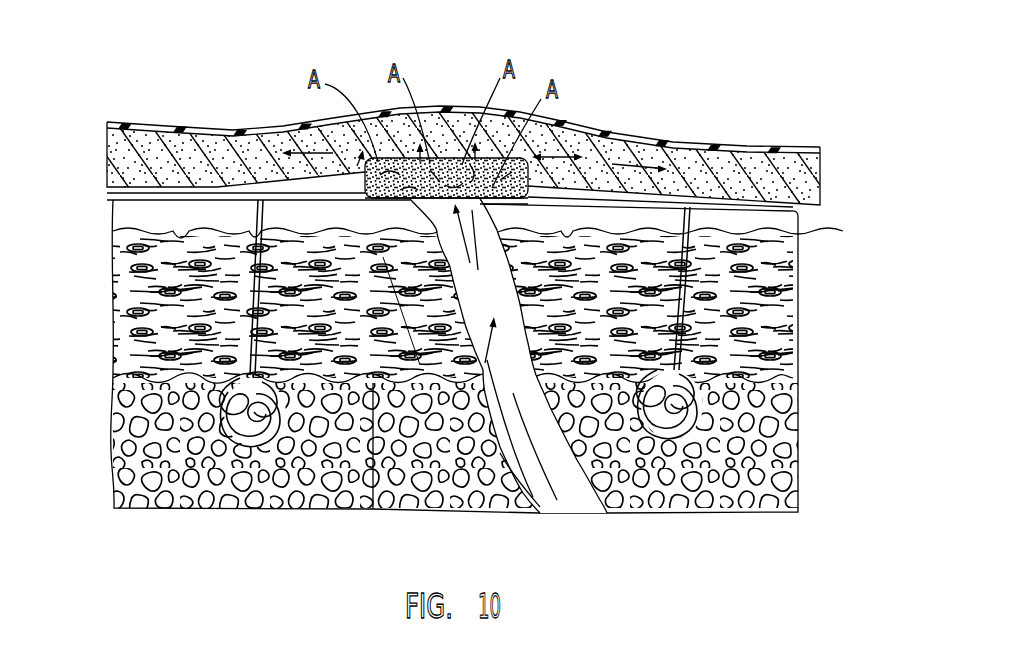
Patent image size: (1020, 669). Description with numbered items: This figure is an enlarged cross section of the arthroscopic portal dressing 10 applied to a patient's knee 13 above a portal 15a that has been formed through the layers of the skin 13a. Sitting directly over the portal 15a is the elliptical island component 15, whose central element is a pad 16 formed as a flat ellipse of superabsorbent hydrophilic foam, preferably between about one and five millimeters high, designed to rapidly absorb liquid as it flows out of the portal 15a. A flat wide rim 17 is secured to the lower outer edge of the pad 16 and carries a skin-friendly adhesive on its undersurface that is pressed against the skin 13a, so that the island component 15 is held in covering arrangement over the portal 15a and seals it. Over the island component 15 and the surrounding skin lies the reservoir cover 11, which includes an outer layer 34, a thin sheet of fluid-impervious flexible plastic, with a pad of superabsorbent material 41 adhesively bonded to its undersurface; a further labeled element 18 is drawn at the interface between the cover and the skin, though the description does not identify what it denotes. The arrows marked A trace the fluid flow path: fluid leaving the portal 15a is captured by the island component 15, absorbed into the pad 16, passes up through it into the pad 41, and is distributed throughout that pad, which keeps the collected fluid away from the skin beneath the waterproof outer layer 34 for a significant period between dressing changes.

The arthroscopic portal dressing 10 is at (472, 113).
The reservoir cover 11 is at (818, 131).
The knee 13 is at (811, 334).
The skin 13a is at (133, 197).
The island component 15 is at (532, 190).
The portal 15a is at (485, 218).
The pad 16 is at (437, 163).
The flat wide rim 17 is at (273, 192).
The contact adhesive layer 18 is at (658, 191).
The outer layer 34 is at (552, 122).
The pad of superabsorbent material 41 is at (137, 147).